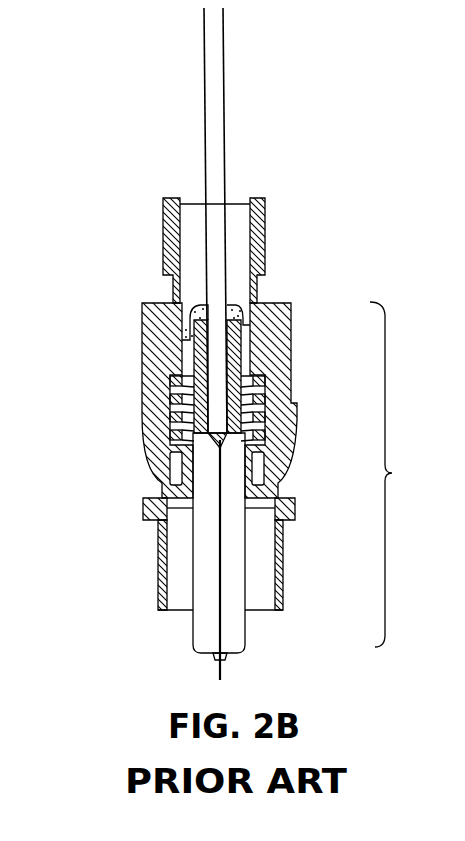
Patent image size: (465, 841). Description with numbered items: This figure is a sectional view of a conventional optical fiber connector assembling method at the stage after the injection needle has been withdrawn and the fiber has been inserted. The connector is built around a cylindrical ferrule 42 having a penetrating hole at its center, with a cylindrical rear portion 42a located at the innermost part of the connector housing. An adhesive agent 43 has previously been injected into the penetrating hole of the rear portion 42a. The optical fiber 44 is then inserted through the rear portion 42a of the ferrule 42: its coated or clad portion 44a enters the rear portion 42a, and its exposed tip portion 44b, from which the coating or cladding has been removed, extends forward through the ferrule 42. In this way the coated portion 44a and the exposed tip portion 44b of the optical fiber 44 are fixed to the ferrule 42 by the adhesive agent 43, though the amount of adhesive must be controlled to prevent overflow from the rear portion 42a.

The ferrule 42 is at (292, 429).
The rear portion 42a is at (245, 425).
The adhesive agent 43 is at (193, 338).
The optical fiber 44 is at (223, 86).
The coated portion 44a is at (218, 276).
The exposed tip portion 44b is at (218, 545).